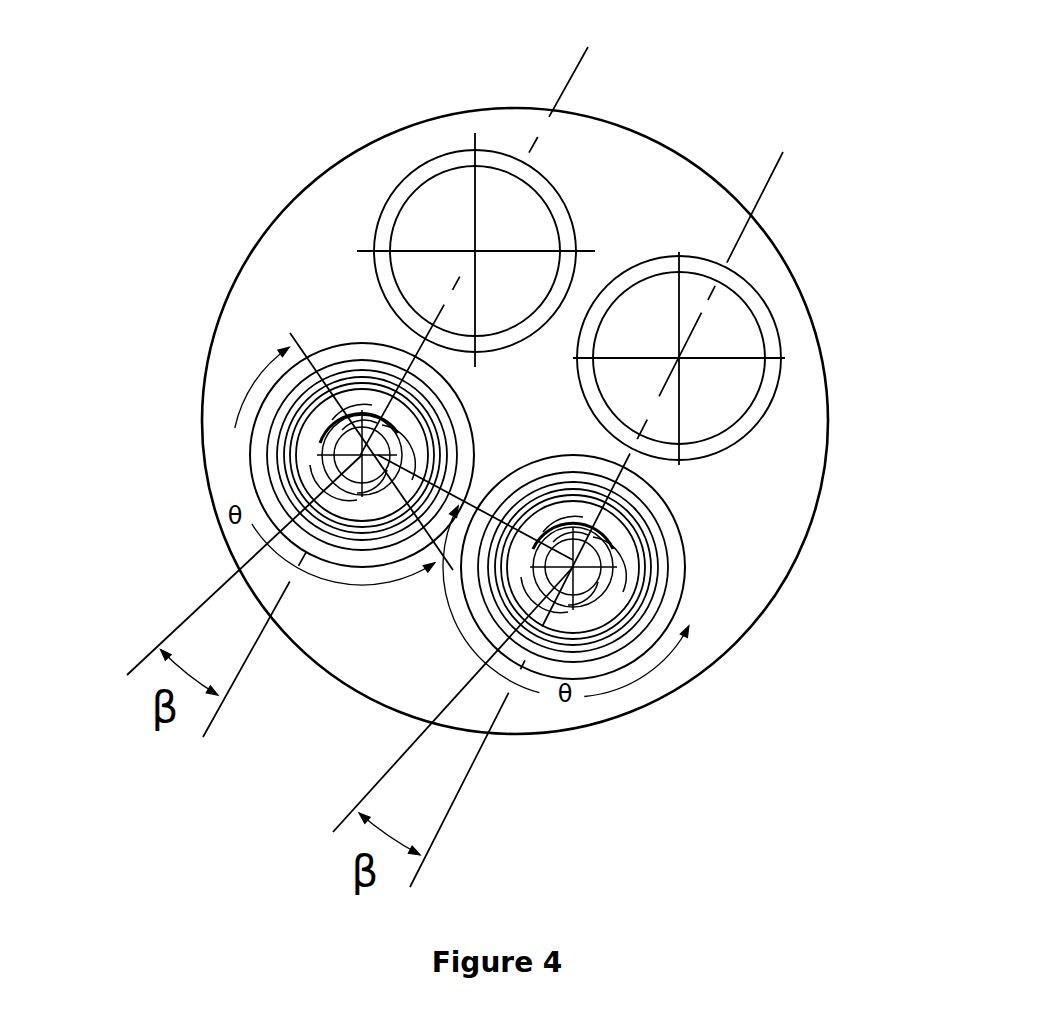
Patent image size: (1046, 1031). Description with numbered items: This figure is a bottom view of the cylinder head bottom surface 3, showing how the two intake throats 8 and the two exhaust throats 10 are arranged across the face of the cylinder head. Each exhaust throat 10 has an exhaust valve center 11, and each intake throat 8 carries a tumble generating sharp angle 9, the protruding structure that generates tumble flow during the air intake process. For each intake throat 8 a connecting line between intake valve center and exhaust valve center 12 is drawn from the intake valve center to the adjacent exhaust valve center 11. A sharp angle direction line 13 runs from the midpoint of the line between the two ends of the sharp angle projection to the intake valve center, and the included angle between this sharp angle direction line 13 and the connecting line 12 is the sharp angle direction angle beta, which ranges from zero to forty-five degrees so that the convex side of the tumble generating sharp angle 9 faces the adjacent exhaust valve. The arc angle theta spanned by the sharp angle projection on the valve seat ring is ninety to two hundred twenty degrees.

The cylinder head bottom surface 3 is at (313, 215).
The intake throat 8 is at (637, 627).
The tumble generating sharp angle 9 is at (300, 458).
The exhaust throat 10 is at (412, 212).
The exhaust valve center 11 is at (472, 243).
The connecting line between intake valve center and exhaust valve center 12 is at (558, 90).
The sharp angle direction line 13 is at (205, 600).